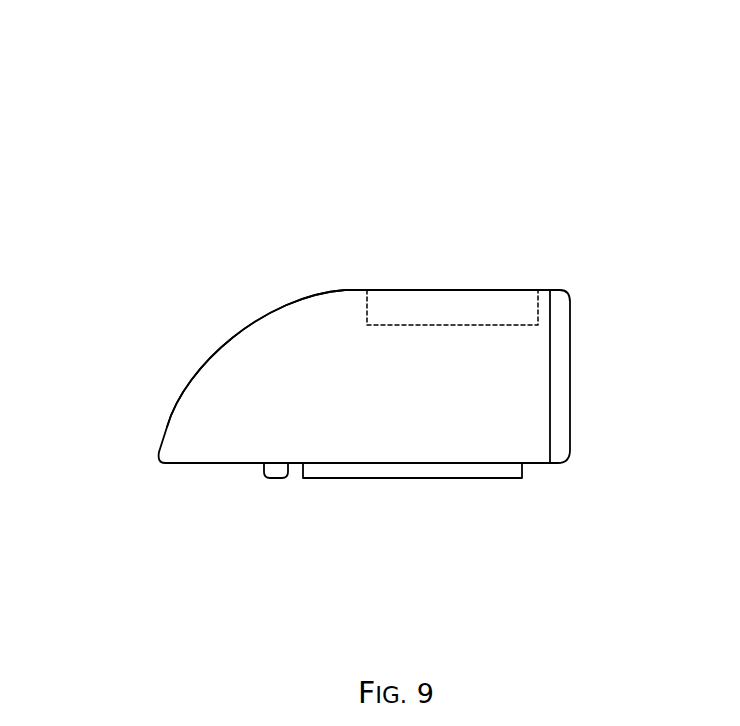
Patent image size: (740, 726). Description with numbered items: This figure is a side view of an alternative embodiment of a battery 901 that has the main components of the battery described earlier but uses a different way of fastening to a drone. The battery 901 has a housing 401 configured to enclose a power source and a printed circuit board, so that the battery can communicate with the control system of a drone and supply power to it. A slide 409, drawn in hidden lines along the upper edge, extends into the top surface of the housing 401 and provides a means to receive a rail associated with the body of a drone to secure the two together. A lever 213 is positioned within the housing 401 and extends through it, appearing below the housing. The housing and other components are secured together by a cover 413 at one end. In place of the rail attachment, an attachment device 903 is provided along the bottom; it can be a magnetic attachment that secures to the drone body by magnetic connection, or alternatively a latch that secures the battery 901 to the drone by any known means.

The battery 901 is at (130, 88).
The housing 401 is at (290, 307).
The slide 409 is at (542, 307).
The cover 413 is at (567, 412).
The lever 213 is at (273, 478).
The attachment device 903 is at (465, 478).